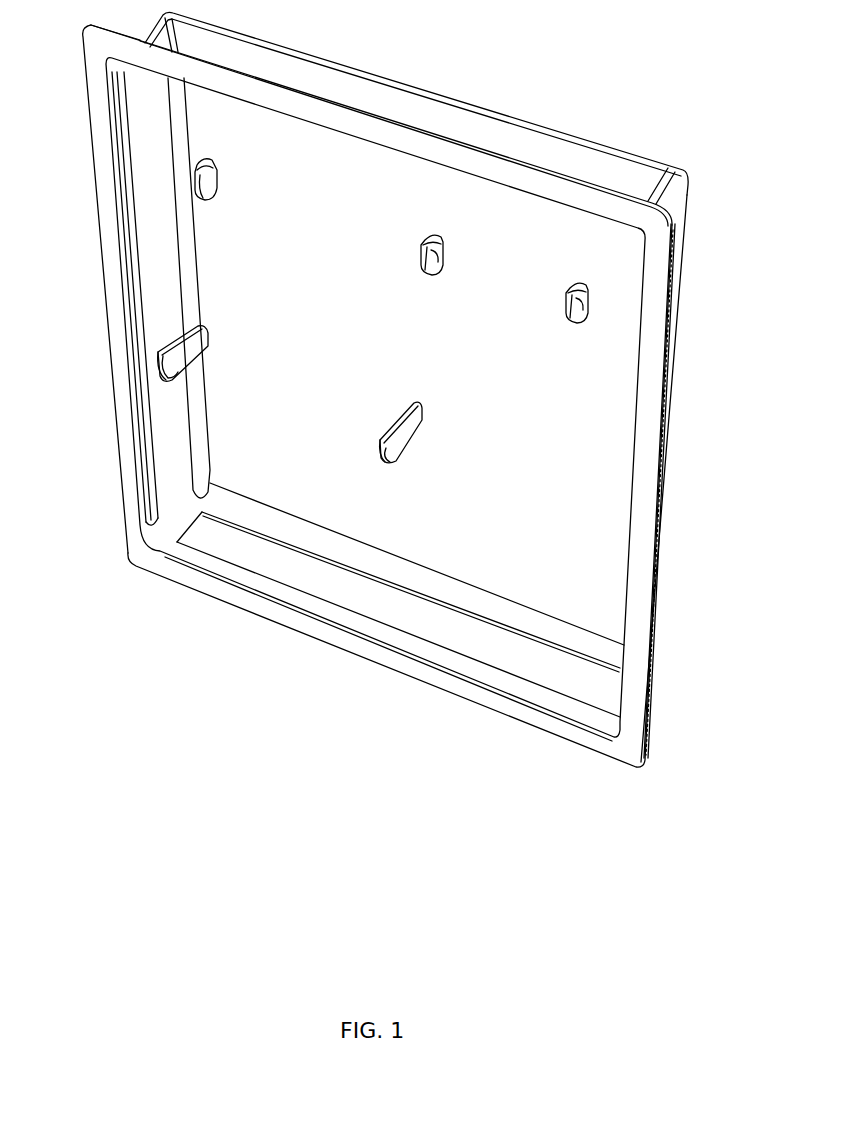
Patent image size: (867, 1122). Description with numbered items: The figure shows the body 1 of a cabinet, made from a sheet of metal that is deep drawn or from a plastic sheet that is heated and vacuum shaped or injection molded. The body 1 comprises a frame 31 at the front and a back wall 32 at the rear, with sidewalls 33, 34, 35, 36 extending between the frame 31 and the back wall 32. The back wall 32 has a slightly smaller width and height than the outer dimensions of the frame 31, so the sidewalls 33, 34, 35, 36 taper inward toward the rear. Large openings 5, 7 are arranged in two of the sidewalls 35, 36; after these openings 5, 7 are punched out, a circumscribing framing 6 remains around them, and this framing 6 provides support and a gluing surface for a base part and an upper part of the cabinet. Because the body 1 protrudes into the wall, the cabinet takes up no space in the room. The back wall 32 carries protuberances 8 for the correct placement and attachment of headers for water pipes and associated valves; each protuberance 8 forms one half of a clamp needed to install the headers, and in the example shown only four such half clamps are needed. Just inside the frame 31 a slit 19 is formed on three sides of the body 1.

The body 1 is at (128, 566).
The opening 5 is at (375, 613).
The framing 6 is at (427, 648).
The opening 7 is at (452, 122).
The protuberances 8 is at (425, 258).
The slit 19 is at (140, 320).
The frame 31 is at (130, 468).
The back wall 32 is at (562, 482).
The sidewall 33 is at (169, 247).
The sidewall 34 is at (667, 483).
The sidewall 35 is at (232, 573).
The sidewall 36 is at (590, 148).